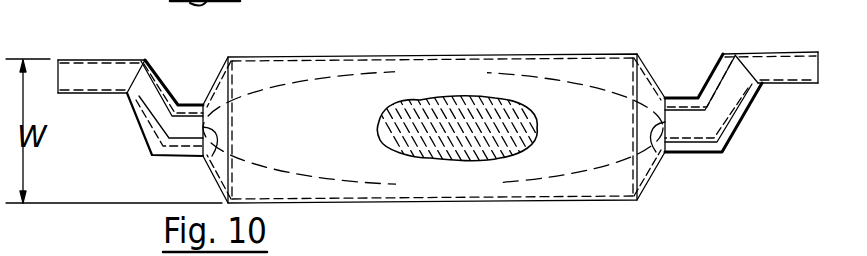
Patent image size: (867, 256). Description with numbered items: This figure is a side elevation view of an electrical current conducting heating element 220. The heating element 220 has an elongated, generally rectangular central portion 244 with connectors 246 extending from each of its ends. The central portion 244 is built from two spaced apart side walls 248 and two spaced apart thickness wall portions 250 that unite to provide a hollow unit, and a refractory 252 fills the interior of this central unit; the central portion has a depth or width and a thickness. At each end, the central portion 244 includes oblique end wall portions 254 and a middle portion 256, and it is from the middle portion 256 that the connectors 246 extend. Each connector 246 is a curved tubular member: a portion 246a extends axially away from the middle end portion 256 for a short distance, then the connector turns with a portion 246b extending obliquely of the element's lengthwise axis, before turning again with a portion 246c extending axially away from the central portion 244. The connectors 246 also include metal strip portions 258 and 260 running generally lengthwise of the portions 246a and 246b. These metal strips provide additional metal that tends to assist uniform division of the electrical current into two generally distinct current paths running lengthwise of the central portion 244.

The heating element 220 is at (520, 45).
The central portion 244 is at (432, 129).
The connectors 246 is at (87, 59).
The portion 246a is at (165, 133).
The portion 246b is at (142, 101).
The portion 246c is at (133, 59).
The side walls 248 is at (327, 117).
The thickness wall portions 250 is at (462, 54).
The refractory 252 is at (413, 138).
The oblique end wall portions 254 is at (209, 71).
The middle portion 256 is at (206, 157).
The metal strip portion 258 is at (203, 73).
The metal strip portion 260 is at (135, 116).